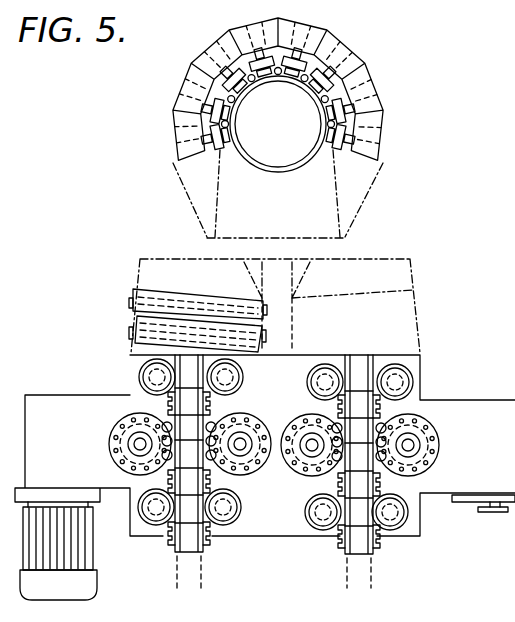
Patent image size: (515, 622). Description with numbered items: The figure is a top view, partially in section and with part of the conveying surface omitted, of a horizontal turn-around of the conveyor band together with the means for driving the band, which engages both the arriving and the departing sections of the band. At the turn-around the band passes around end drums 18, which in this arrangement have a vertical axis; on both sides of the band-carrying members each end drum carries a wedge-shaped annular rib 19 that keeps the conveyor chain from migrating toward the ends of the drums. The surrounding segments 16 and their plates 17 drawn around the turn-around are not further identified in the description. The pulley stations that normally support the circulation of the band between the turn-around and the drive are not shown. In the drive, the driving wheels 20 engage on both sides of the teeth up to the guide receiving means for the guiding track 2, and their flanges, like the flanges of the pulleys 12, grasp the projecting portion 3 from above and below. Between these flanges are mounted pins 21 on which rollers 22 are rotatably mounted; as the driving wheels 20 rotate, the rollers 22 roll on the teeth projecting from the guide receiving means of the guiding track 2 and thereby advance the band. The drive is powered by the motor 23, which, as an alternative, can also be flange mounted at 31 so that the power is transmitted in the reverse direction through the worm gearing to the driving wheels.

The guiding track 2 is at (195, 556).
The projecting portion 3 is at (383, 412).
The pulleys 12 is at (407, 378).
The cooling segment 16 is at (176, 132).
The segment shoe plates 17 is at (188, 90).
The end drums 18 is at (265, 152).
The wedge-shaped annular rib 19 is at (291, 171).
The driving wheels 20 is at (437, 447).
The pins 21 is at (114, 451).
The rollers 22 is at (160, 428).
The motor 23 is at (85, 550).
The flange mounting location 31 is at (493, 513).